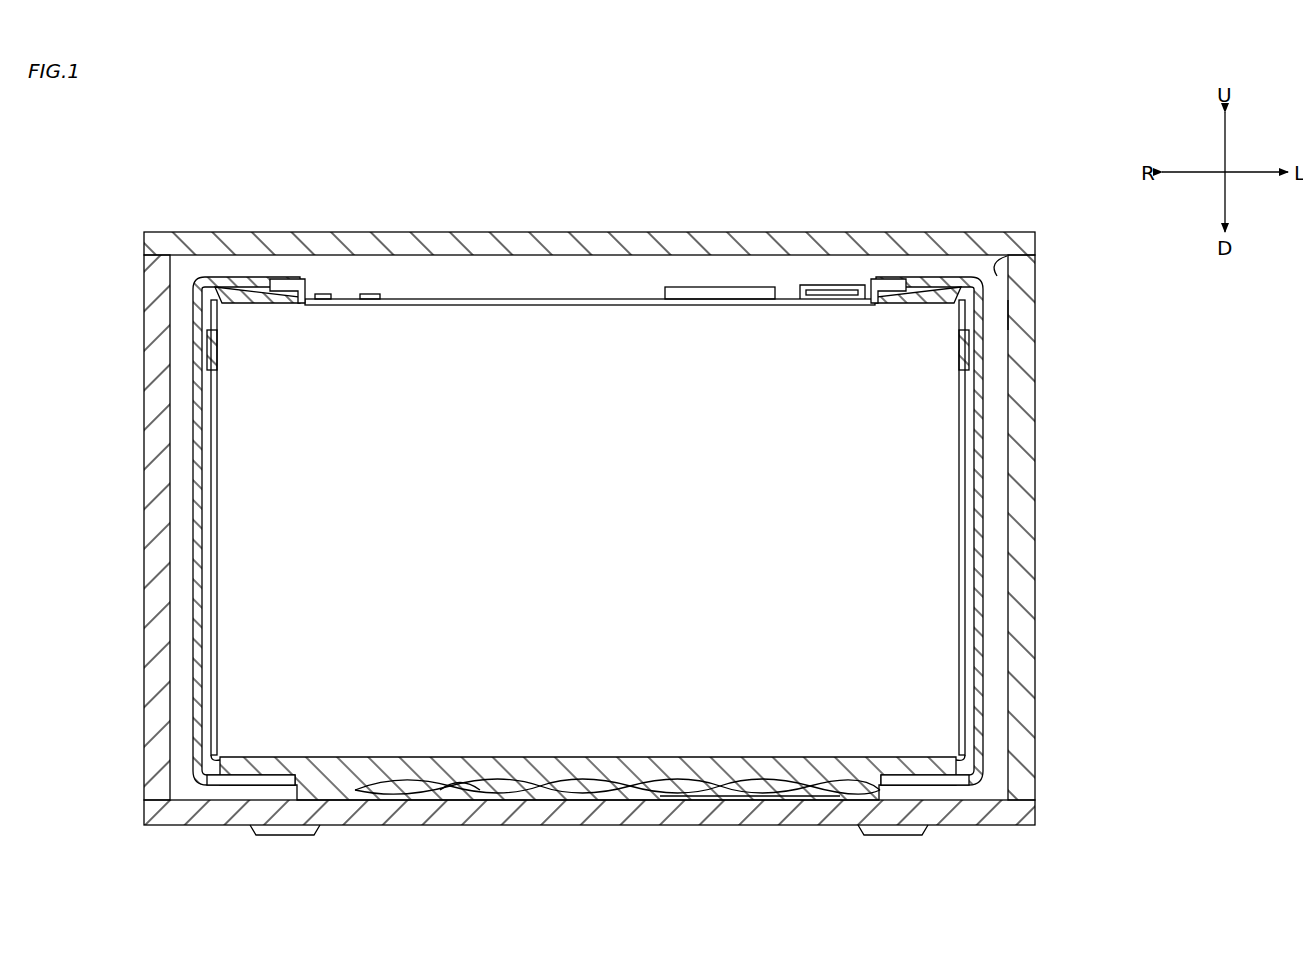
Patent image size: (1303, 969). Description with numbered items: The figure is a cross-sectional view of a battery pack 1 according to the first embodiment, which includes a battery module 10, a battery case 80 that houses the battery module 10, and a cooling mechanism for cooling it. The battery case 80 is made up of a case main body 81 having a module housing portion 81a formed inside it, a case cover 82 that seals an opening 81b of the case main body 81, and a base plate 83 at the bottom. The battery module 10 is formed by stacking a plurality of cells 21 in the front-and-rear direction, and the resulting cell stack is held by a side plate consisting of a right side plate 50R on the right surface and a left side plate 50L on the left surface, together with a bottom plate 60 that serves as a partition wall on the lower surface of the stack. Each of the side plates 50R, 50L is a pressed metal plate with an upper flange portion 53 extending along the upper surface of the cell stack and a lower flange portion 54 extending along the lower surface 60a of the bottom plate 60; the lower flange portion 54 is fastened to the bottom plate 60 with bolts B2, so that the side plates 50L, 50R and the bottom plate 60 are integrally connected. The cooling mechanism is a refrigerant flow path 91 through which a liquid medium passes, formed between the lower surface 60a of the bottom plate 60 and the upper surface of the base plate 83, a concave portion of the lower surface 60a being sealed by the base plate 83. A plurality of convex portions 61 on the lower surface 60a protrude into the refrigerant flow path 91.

The battery pack 1 is at (270, 212).
The battery module 10 is at (420, 290).
The cell 21 is at (570, 325).
The upper flange portion 53 is at (220, 280).
The lower flange portion 54 is at (213, 782).
The right side plate 50R is at (192, 498).
The left side plate 50L is at (985, 492).
The bottom plate 60 is at (393, 790).
The lower surface of the bottom plate 60a is at (457, 790).
The convex portion 61 is at (625, 792).
The battery case 80 is at (1037, 415).
The case main body 81 is at (1036, 597).
The module housing portion 81a is at (994, 312).
The opening of the case main body 81b is at (995, 256).
The case cover 82 is at (765, 232).
The base plate 83 is at (657, 826).
The refrigerant flow path 91 is at (718, 790).
The bolt B2 is at (280, 836).